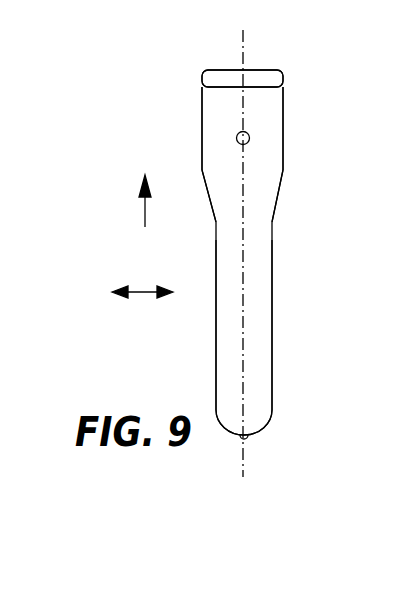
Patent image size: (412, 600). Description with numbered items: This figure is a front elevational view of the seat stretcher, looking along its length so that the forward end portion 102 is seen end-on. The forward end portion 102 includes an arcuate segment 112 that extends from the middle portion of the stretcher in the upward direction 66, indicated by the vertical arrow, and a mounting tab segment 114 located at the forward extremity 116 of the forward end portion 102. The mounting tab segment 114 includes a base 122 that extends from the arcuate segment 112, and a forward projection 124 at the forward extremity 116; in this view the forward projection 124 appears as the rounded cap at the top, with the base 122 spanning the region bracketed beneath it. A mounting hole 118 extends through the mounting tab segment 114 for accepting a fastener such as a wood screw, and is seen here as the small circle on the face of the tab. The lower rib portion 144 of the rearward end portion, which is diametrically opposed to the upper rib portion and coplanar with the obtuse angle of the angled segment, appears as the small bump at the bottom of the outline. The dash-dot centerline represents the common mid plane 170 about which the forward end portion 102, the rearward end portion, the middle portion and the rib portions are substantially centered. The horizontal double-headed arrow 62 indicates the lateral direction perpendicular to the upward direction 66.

The forward end portion 102 is at (276, 345).
The arcuate segment 112 is at (273, 310).
The mounting tab segment 114 is at (283, 153).
The forward extremity 116 is at (283, 78).
The forward projection 124 is at (242, 78).
The mounting hole 118 is at (250, 137).
The base 122 is at (287, 278).
The lower rib portion 144 is at (247, 443).
The common mid plane 170 is at (245, 52).
The upward direction 66 is at (145, 202).
The lateral direction arrow 62 is at (142, 294).